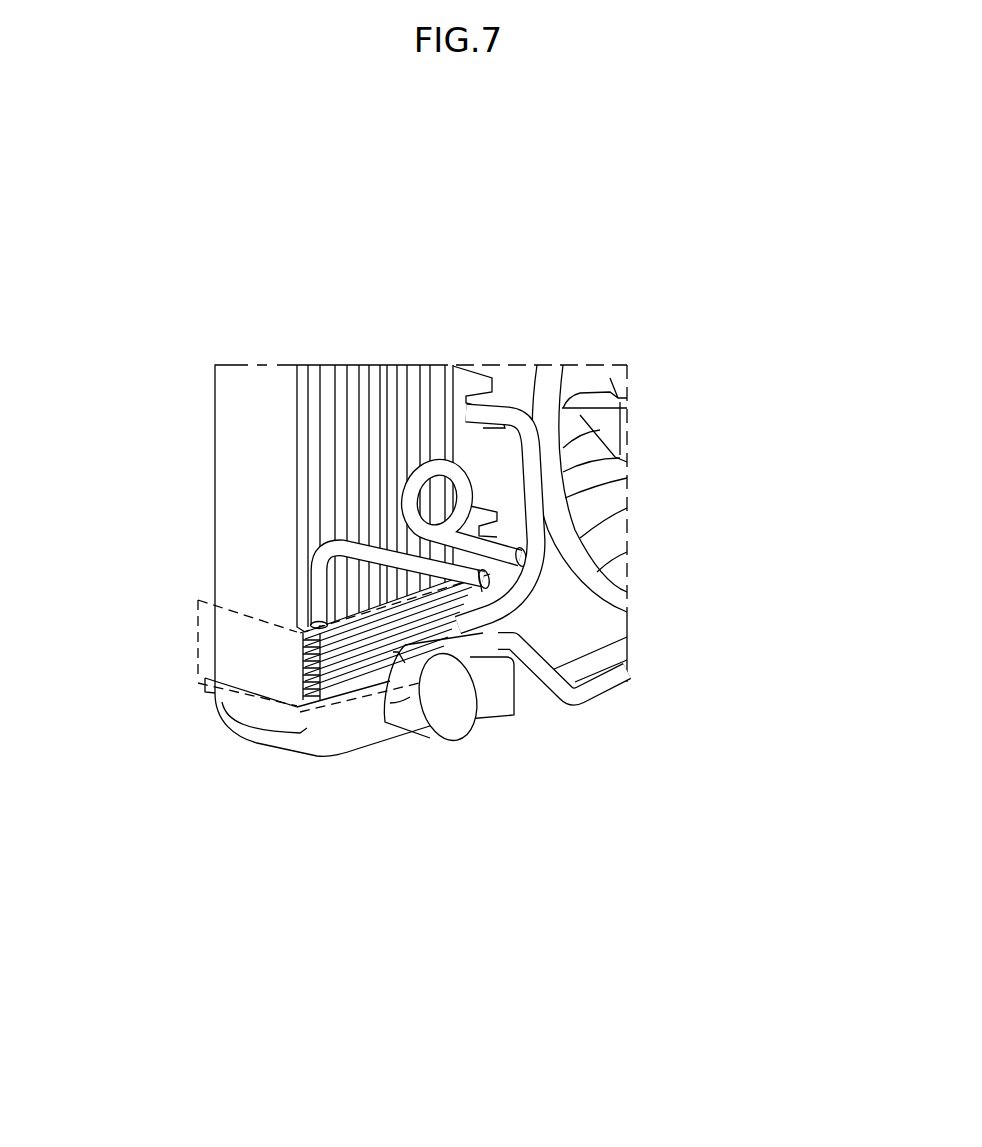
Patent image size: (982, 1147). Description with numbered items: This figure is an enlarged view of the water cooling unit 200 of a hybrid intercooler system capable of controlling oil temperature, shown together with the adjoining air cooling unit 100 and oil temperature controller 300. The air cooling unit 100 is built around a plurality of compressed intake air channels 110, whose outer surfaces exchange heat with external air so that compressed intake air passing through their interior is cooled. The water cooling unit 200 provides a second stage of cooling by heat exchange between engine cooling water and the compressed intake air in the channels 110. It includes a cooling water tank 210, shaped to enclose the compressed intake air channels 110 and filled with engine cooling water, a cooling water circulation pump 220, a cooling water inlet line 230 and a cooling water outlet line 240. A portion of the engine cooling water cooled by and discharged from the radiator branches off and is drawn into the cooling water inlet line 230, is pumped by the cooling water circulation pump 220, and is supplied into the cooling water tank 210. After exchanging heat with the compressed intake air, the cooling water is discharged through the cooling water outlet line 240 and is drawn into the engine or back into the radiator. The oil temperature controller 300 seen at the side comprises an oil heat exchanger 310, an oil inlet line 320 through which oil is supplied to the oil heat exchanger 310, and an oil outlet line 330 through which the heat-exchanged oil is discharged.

The air cooling unit 100 is at (230, 487).
The compressed intake air channels 110 is at (332, 398).
The water cooling unit 200 is at (662, 883).
The cooling water tank 210 is at (265, 662).
The cooling water circulation pump 220 is at (448, 697).
The cooling water inlet line 230 is at (530, 580).
The cooling water outlet line 240 is at (550, 683).
The oil temperature controller 300 is at (787, 353).
The oil heat exchanger 310 is at (484, 558).
The oil inlet line 320 is at (352, 540).
The oil outlet line 330 is at (460, 480).